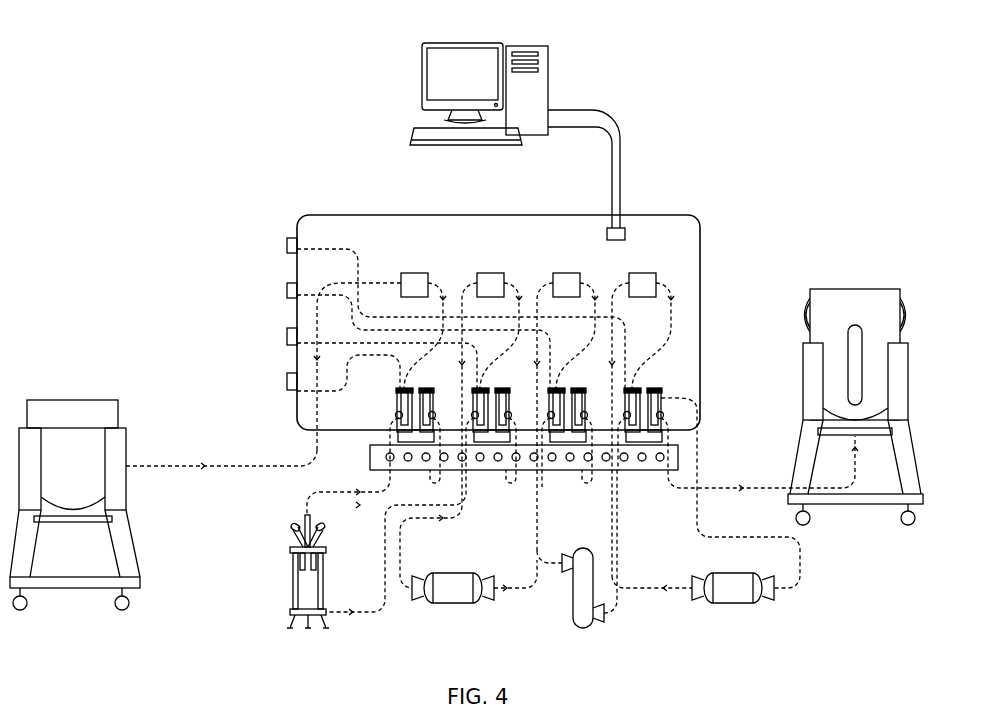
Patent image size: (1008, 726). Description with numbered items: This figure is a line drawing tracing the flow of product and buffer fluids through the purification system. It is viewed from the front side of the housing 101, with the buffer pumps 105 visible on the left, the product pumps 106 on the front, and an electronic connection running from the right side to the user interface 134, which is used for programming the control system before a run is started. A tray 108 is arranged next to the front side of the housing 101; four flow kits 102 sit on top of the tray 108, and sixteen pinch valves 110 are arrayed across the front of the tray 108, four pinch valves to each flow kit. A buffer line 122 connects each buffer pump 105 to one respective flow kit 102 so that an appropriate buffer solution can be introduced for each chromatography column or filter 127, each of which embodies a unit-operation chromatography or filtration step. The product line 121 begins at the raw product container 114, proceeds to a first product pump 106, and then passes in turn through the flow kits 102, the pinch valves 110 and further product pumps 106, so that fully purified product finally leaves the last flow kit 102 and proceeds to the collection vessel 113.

The housing 101 is at (700, 222).
The flow kit 102 is at (660, 398).
The buffer pump 105 is at (288, 245).
The product pump 106 is at (650, 272).
The tray 108 is at (370, 450).
The pinch valve 110 is at (663, 458).
The collection vessel 113 is at (878, 289).
The raw product container 114 is at (85, 400).
The product line 121 is at (190, 468).
The buffer line 122 is at (323, 248).
The chromatography column (or filter) 127 is at (290, 600).
The user interface 134 is at (548, 58).